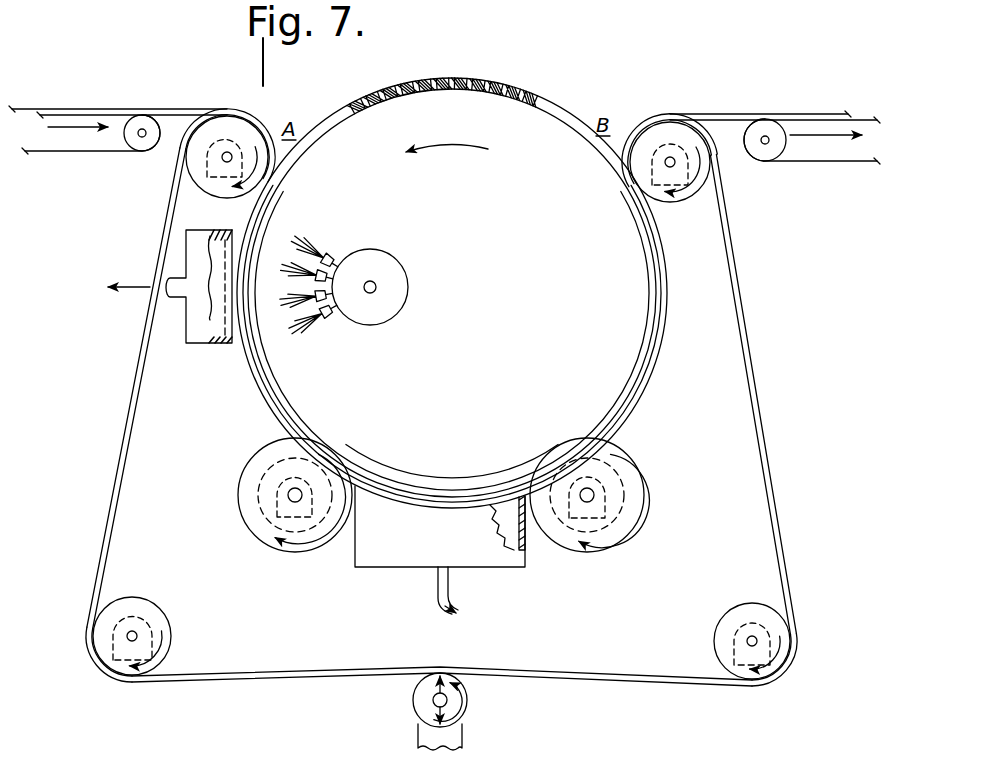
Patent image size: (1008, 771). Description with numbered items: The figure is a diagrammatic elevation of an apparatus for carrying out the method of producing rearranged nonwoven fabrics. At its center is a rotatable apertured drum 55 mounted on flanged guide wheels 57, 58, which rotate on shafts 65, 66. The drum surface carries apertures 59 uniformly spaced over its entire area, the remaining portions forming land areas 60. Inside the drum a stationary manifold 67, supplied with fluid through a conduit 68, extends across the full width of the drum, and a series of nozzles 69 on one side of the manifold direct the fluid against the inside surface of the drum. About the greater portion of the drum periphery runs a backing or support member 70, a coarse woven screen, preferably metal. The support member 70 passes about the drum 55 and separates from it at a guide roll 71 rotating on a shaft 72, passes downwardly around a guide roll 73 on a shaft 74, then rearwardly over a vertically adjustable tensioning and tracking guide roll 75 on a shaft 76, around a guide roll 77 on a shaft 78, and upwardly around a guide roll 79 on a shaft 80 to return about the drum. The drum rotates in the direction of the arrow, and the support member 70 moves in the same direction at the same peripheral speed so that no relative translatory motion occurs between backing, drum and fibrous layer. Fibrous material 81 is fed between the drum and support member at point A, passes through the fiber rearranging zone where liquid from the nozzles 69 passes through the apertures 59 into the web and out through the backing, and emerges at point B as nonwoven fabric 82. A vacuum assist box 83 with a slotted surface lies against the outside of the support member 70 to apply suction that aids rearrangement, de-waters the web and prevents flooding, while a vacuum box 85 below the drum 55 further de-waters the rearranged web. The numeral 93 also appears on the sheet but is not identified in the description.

The rotatable apertured drum 55 is at (571, 115).
The flanged guide wheel 57 is at (273, 538).
The flanged guide wheel 58 is at (575, 545).
The apertures 59 is at (530, 100).
The land areas 60 is at (468, 80).
The shaft 65 is at (288, 497).
The shaft 66 is at (594, 490).
The stationary manifold 67 is at (389, 264).
The conduit 68 is at (373, 291).
The nozzles 69 is at (329, 258).
The backing or support member 70 is at (748, 327).
The guide roll 71 is at (706, 175).
The shaft 72 is at (670, 168).
The guide roll 73 is at (764, 612).
The shaft 74 is at (757, 641).
The tensioning and tracking guide roll 75 is at (468, 702).
The shaft 76 is at (432, 701).
The guide roll 77 is at (168, 636).
The shaft 78 is at (133, 632).
The guide roll 79 is at (240, 133).
The shaft 80 is at (221, 159).
The fibrous material 81 is at (172, 103).
The nonwoven fabric 82 is at (742, 110).
The vacuum assist box 83 is at (198, 331).
The vacuum box 85 is at (490, 553).
The frame 93 is at (300, 762).